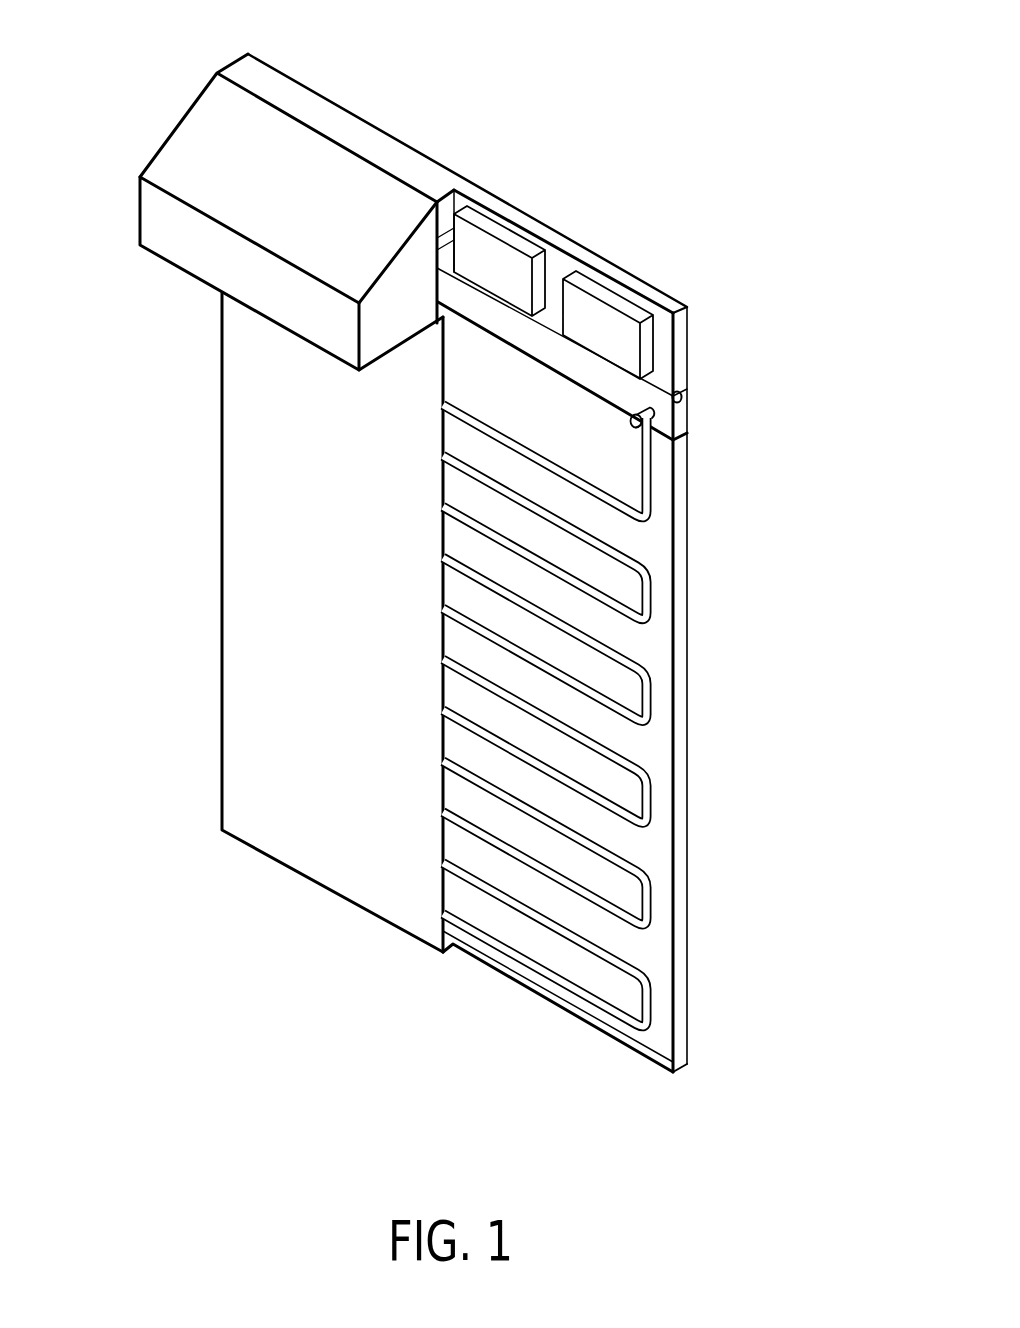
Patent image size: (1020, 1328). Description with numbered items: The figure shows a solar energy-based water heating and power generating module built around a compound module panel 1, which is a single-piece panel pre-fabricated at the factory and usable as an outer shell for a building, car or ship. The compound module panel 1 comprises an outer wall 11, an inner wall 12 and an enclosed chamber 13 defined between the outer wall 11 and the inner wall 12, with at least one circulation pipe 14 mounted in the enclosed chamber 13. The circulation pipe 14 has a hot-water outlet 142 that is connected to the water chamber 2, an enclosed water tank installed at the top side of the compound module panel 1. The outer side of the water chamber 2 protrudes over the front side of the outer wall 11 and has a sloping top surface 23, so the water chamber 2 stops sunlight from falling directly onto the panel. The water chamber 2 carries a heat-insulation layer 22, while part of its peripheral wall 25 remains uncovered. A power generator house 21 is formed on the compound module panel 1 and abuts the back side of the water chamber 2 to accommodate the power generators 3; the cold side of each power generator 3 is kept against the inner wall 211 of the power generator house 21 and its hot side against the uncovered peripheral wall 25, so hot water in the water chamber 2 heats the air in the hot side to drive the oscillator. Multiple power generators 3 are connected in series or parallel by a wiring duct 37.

The compound module panel 1 is at (477, 563).
The water chamber 2 is at (266, 236).
The power generator 3 is at (503, 210).
The outer wall 11 is at (255, 572).
The inner wall 12 is at (680, 689).
The enclosed chamber 13 is at (566, 563).
The circulation pipe 14 is at (641, 715).
The power generator house 21 is at (578, 277).
The heat-insulation layer 22 is at (374, 330).
The sloping top surface 23 is at (205, 135).
The peripheral wall 25 is at (407, 260).
The wiring duct 37 is at (655, 383).
The hot-water outlet 142 is at (647, 427).
The inner wall of the power generator house 211 is at (570, 263).